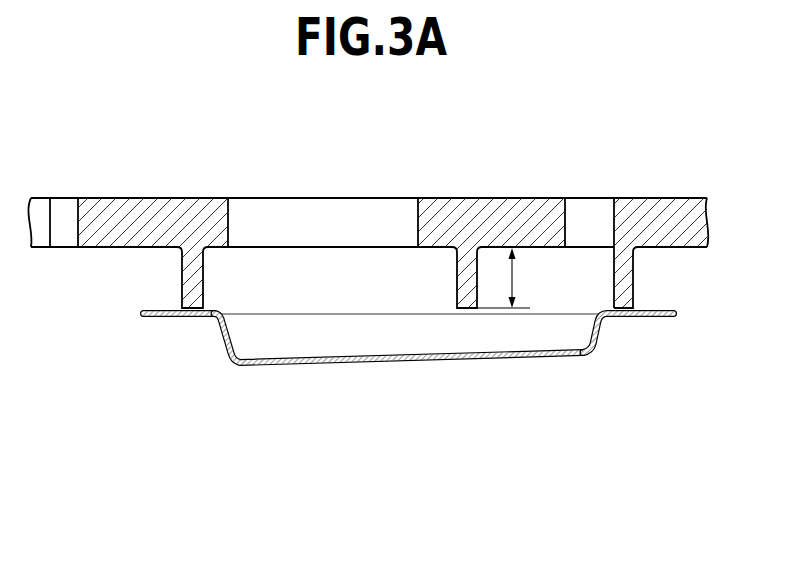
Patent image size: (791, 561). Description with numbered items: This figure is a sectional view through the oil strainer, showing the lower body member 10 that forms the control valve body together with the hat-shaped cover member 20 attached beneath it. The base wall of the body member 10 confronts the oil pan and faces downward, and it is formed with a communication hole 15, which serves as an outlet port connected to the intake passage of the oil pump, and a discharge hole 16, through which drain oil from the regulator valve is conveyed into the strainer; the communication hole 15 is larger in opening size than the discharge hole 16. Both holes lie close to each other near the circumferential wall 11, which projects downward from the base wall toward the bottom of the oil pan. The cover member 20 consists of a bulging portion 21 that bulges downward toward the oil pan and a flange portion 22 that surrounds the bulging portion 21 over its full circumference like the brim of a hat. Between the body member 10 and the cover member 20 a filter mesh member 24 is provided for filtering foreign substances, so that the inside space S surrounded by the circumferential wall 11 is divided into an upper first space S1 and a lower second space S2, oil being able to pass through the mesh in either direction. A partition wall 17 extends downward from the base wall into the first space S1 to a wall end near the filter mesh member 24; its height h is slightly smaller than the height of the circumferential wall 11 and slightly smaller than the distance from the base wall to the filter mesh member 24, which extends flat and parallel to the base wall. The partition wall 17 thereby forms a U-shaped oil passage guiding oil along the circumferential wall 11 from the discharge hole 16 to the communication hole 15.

The lower body member 10 is at (683, 213).
The circumferential wall 11 is at (622, 290).
The communication hole 15 is at (417, 211).
The discharge hole 16 is at (612, 211).
The partition wall 17 is at (468, 305).
The cover member 20 is at (118, 342).
The bulging portion 21 is at (222, 342).
The flange portion 22 is at (180, 318).
The filter mesh member 24 is at (563, 318).
The inside space S is at (353, 445).
The first space S1 is at (266, 296).
The second space S2 is at (328, 336).
The height of partition wall h is at (505, 278).